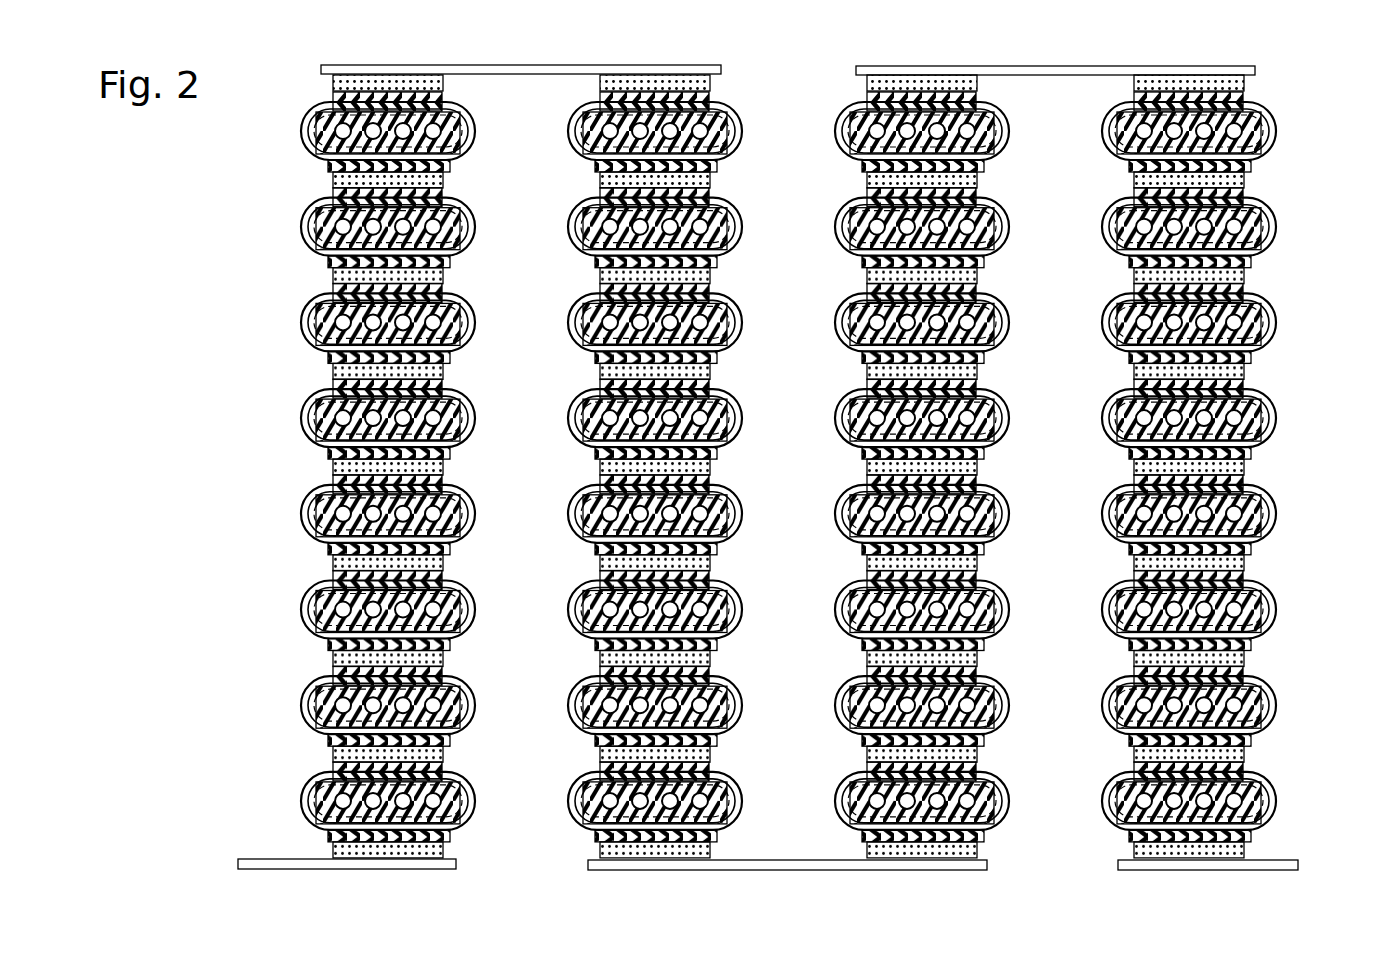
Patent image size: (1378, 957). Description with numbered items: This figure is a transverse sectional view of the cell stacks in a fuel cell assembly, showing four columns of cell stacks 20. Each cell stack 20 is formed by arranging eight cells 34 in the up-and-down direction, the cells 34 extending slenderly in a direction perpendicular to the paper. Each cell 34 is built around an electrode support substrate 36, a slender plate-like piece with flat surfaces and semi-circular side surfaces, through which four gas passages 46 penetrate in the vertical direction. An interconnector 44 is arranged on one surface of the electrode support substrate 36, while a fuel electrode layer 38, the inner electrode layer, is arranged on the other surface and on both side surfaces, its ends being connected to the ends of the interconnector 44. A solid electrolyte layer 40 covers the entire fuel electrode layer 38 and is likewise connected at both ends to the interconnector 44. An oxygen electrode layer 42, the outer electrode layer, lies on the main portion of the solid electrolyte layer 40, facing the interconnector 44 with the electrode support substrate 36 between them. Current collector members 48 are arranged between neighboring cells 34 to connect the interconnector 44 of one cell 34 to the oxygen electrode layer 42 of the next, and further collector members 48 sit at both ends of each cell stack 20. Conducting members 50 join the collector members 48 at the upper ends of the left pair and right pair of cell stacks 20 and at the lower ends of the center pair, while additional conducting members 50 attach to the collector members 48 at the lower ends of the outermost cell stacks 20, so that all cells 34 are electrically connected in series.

The cell stack 20 is at (741, 95).
The cell 34 is at (791, 372).
The electrode support substrate 36 is at (300, 297).
The fuel electrode layer 38 is at (301, 326).
The solid electrolyte layer 40 is at (311, 333).
The oxygen electrode layer 42 is at (441, 344).
The interconnector 44 is at (333, 286).
The gas passage 46 is at (430, 308).
The current collector member 48 is at (325, 178).
The conducting member 50 is at (330, 57).